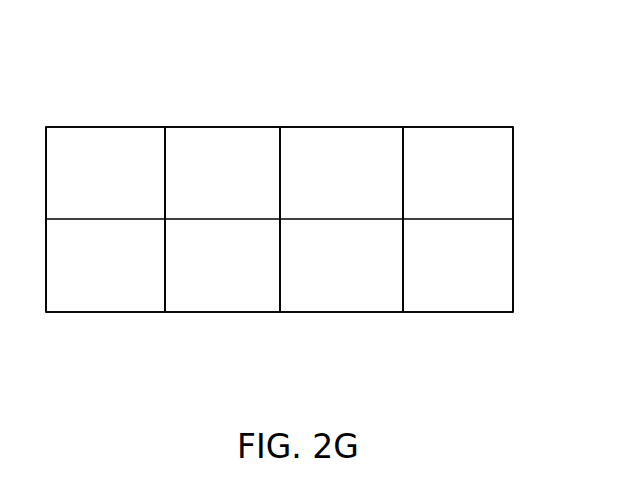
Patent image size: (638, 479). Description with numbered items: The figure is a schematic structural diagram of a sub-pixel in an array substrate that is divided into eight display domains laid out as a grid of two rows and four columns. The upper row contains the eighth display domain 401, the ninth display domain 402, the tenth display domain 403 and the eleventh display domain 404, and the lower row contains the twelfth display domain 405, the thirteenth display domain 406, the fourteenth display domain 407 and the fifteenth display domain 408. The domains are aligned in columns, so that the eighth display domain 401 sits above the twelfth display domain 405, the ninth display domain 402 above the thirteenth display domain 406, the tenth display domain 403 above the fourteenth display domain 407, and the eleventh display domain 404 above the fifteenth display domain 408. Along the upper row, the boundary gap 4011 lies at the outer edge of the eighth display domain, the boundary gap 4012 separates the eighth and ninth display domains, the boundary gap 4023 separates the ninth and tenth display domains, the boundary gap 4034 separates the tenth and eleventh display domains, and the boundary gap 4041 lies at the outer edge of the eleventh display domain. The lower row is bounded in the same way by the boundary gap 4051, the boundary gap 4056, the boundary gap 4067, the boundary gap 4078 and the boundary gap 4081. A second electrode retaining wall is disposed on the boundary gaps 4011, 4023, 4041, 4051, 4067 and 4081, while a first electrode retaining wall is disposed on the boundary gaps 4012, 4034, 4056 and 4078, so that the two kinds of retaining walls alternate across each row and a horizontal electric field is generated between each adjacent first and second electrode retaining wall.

The eighth display domain 401 is at (88, 145).
The ninth display domain 402 is at (217, 145).
The tenth display domain 403 is at (335, 145).
The eleventh display domain 404 is at (446, 145).
The boundary gap 4011 is at (47, 133).
The boundary gap 4012 is at (167, 133).
The boundary gap 4023 is at (282, 133).
The boundary gap 4034 is at (404, 135).
The boundary gap 4041 is at (513, 135).
The twelfth display domain 405 is at (112, 300).
The thirteenth display domain 406 is at (219, 300).
The fourteenth display domain 407 is at (334, 300).
The fifteenth display domain 408 is at (460, 300).
The boundary gap 4051 is at (47, 292).
The boundary gap 4056 is at (165, 296).
The boundary gap 4067 is at (280, 296).
The boundary gap 4078 is at (404, 296).
The boundary gap 4081 is at (513, 296).